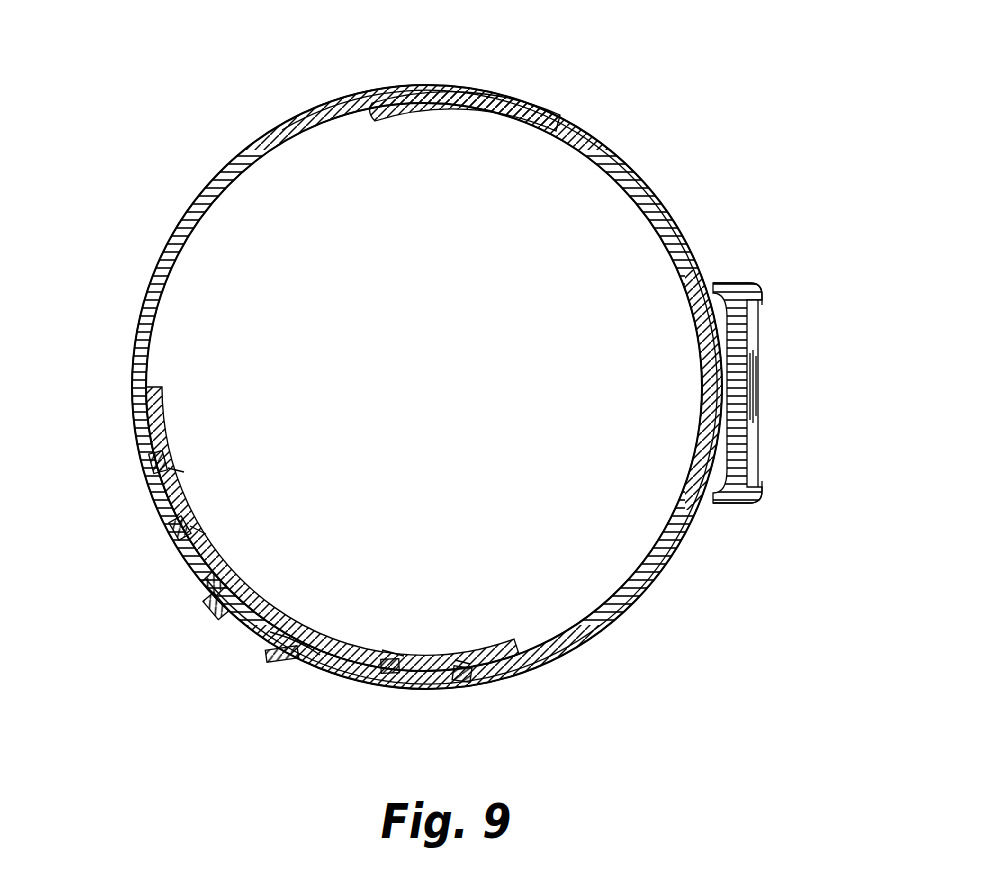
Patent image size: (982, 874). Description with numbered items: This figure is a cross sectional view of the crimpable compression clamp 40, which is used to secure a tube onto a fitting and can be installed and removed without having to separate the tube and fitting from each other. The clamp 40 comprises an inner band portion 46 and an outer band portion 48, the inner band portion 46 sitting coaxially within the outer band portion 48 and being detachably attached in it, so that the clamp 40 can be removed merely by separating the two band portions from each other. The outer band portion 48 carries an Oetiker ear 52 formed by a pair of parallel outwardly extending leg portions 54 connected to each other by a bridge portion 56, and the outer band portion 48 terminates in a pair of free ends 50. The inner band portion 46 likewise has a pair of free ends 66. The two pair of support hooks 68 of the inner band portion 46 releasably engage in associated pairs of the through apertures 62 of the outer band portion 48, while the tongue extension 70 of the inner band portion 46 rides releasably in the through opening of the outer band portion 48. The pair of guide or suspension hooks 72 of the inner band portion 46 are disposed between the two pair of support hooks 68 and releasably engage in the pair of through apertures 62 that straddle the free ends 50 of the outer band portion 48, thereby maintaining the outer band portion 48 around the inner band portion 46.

The crimpable compression clamp 40 is at (217, 49).
The inner band portion 46 is at (427, 387).
The outer band portion 48 is at (401, 387).
The pair of free ends of outer band portion 50 is at (258, 670).
The Oetiker ear 52 is at (779, 394).
The pair of parallel outwardly extending leg portions 54 is at (739, 381).
The bridge portion 56 is at (791, 339).
The pair of three through apertures 62 is at (256, 568).
The pair of free ends of inner band portion 66 is at (332, 398).
The two pair of support hooks 68 is at (319, 559).
The tongue extension 70 is at (465, 154).
The pair of guide or suspension hooks 72 is at (212, 672).